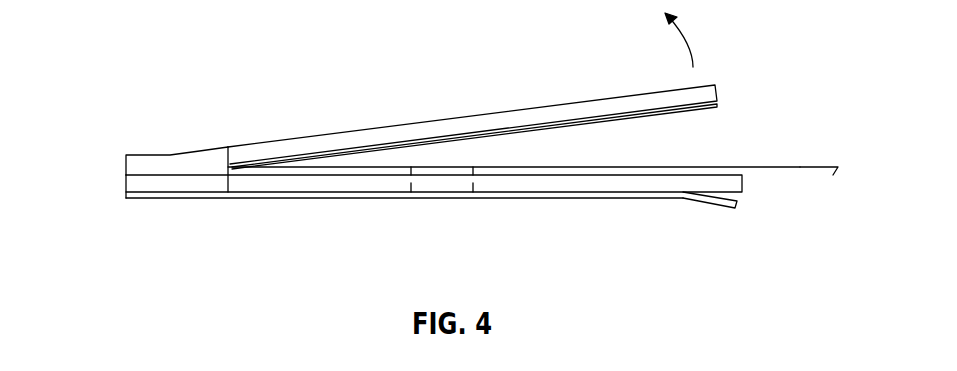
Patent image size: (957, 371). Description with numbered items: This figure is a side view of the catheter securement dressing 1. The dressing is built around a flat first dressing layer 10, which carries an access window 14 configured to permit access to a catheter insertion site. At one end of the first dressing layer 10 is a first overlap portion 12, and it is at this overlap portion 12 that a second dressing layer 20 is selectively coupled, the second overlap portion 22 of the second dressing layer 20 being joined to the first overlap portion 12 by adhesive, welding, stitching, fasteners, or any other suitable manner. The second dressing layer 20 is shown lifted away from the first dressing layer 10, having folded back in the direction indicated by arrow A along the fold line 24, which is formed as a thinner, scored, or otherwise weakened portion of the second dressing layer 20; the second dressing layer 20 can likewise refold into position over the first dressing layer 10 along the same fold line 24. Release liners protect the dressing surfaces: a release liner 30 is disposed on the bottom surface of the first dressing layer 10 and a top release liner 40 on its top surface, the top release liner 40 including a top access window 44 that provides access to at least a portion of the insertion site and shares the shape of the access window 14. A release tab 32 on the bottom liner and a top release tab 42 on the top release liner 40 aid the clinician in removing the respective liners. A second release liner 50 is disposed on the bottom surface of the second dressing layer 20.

The catheter securement dressing 1 is at (84, 41).
The arrow A is at (693, 45).
The first dressing layer 10 is at (730, 180).
The first overlap portion 12 is at (137, 185).
The access window 14 is at (443, 183).
The second dressing layer 20 is at (383, 137).
The second overlap portion 22 is at (168, 153).
The fold line 24 is at (228, 148).
The release liner 30 is at (570, 199).
The release tab 32 is at (713, 205).
The top release liner 40 is at (698, 165).
The top release tab 42 is at (837, 169).
The top access window 44 is at (453, 172).
The second release liner 50 is at (628, 116).